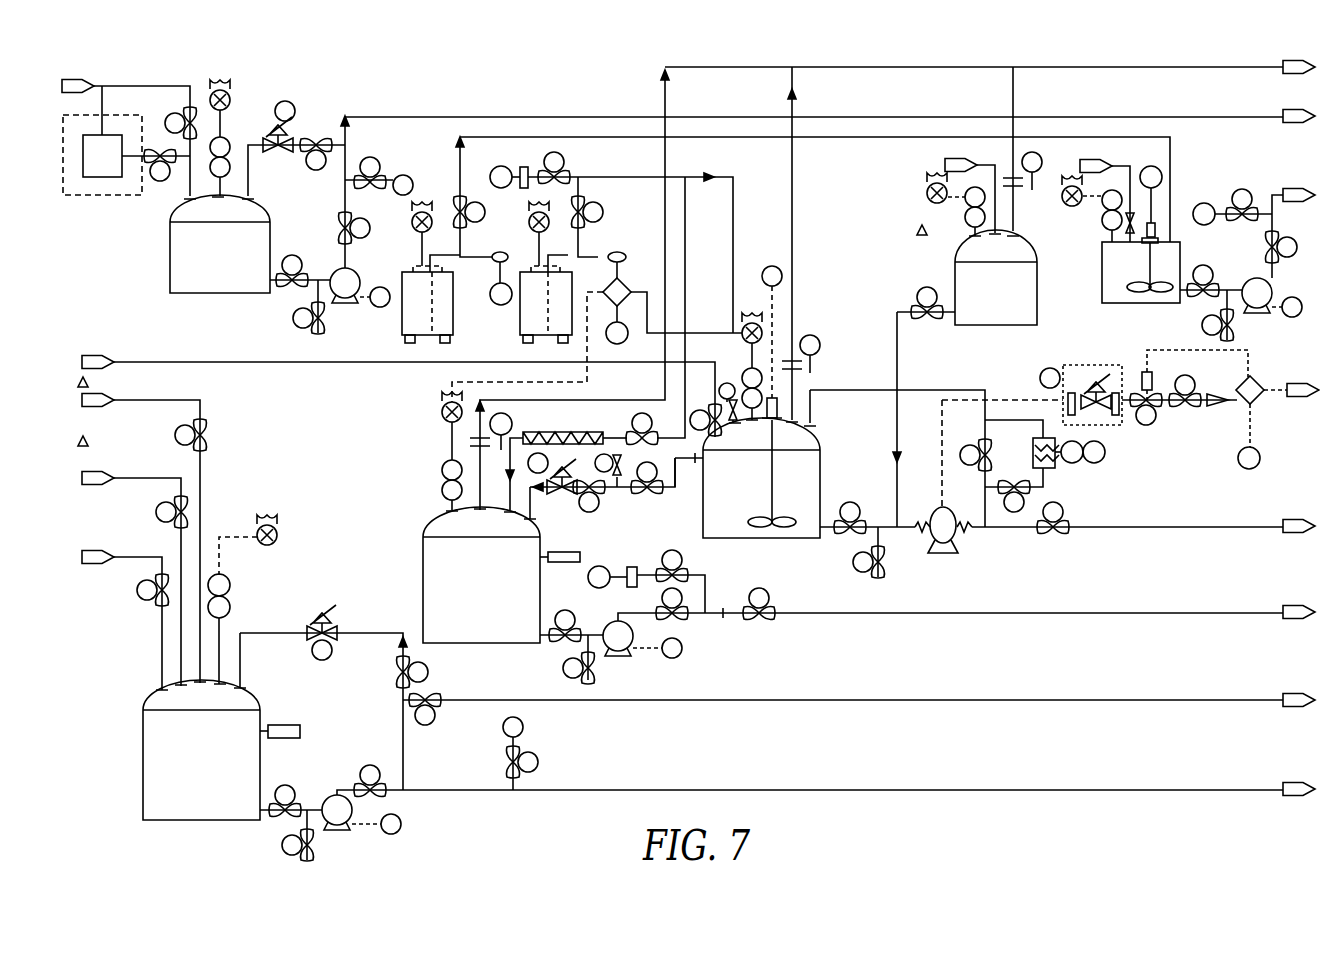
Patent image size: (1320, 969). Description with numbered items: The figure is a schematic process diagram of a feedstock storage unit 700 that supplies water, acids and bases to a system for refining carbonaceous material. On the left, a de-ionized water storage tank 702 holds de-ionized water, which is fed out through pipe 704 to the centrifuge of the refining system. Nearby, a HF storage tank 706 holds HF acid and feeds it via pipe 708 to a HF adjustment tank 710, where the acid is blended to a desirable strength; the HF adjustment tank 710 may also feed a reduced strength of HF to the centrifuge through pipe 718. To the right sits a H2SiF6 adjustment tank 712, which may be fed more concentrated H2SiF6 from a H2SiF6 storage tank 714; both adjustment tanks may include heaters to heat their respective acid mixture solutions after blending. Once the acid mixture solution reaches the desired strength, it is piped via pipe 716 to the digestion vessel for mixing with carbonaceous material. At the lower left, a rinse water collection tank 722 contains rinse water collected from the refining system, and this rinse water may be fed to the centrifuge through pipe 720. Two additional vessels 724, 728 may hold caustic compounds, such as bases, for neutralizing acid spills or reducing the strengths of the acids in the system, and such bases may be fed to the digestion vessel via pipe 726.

The feedstock storage unit 700 is at (690, 463).
The de-ionized water storage tank 702 is at (245, 271).
The pipe 704 is at (507, 115).
The HF storage tank 706 is at (518, 313).
The pipe 708 is at (735, 217).
The HF adjustment tank 710 is at (506, 605).
The H2SiF6 adjustment tank 712 is at (780, 540).
The H2SiF6 storage tank 714 is at (997, 325).
The pipe 716 is at (1180, 528).
The pipe 718 is at (1030, 615).
The pipe 720 is at (1135, 790).
The rinse water collection tank 722 is at (224, 783).
The vessel 724 is at (402, 318).
The pipe 726 is at (1278, 188).
The vessel 728 is at (1120, 305).